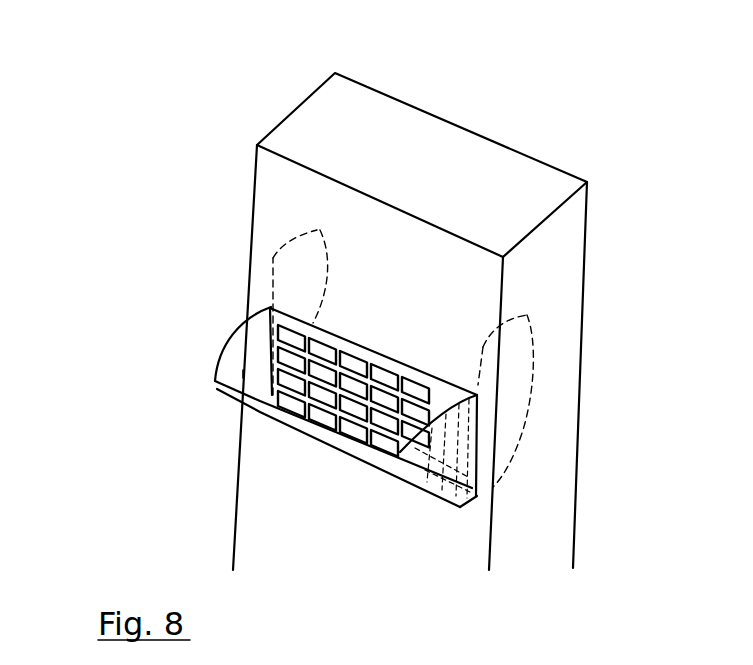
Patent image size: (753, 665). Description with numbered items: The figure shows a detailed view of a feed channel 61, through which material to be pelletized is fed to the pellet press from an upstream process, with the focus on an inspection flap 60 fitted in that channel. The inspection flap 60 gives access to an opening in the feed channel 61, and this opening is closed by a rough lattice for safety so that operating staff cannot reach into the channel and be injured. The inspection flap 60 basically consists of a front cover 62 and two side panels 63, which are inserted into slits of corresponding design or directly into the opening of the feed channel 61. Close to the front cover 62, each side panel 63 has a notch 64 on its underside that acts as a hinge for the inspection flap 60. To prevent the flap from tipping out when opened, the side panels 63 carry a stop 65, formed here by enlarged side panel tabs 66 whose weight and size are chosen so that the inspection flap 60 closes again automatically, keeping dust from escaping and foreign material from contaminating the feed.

The inspection flap 60 is at (196, 341).
The feed channel 61 is at (350, 145).
The front cover 62 is at (253, 418).
The side panels 63 is at (222, 358).
The notch 64 is at (477, 500).
The stop 65 is at (273, 297).
The side panel tabs 66 is at (515, 412).